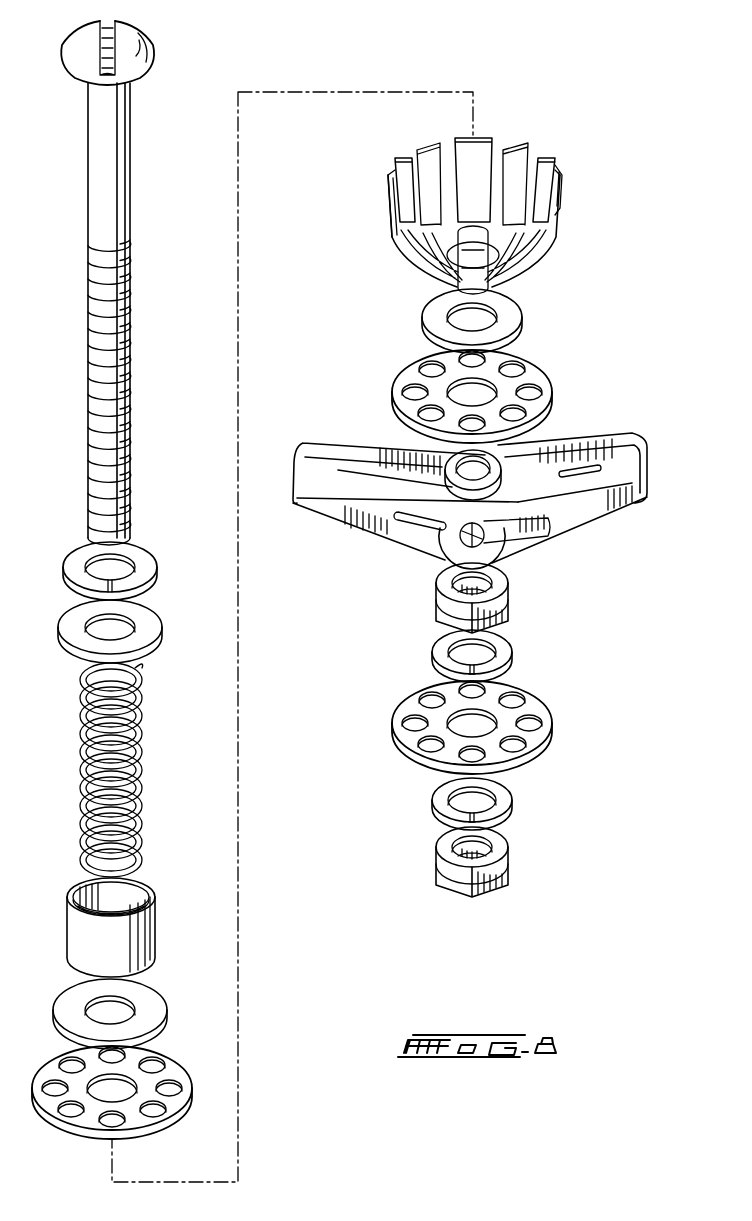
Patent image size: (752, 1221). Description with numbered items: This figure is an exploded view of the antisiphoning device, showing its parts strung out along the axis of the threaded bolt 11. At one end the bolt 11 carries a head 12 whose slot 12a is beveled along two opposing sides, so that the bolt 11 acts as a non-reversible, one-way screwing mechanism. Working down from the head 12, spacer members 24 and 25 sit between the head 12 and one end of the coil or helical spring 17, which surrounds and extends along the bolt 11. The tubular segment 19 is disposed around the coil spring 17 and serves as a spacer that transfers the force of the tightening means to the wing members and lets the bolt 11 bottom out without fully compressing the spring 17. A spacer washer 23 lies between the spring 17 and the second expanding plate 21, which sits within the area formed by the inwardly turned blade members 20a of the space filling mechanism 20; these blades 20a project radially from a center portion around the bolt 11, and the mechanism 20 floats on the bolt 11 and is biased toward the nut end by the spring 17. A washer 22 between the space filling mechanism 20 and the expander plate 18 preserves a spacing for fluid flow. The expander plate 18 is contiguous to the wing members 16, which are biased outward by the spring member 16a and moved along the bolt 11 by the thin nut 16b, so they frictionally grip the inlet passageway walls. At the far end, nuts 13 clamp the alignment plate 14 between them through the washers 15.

The bolt 11 is at (122, 218).
The head 12 is at (152, 50).
The slot 12a is at (108, 36).
The nuts 13 is at (510, 595).
The alignment plate 14 is at (552, 718).
The washers 15 is at (512, 652).
The wing members 16 is at (658, 462).
The spring member 16a is at (568, 468).
The thin nut 16b is at (515, 497).
The coil spring 17 is at (142, 765).
The expander plate 18 is at (537, 380).
The tubular segment 19 is at (155, 932).
The space filling mechanism 20 is at (553, 146).
The blade members 20a is at (566, 210).
The second expanding plate 21 is at (185, 1086).
The washer 22 is at (522, 317).
The spacer washer 23 is at (160, 1007).
The spacer member 24 is at (160, 618).
The spacer member 25 is at (153, 563).